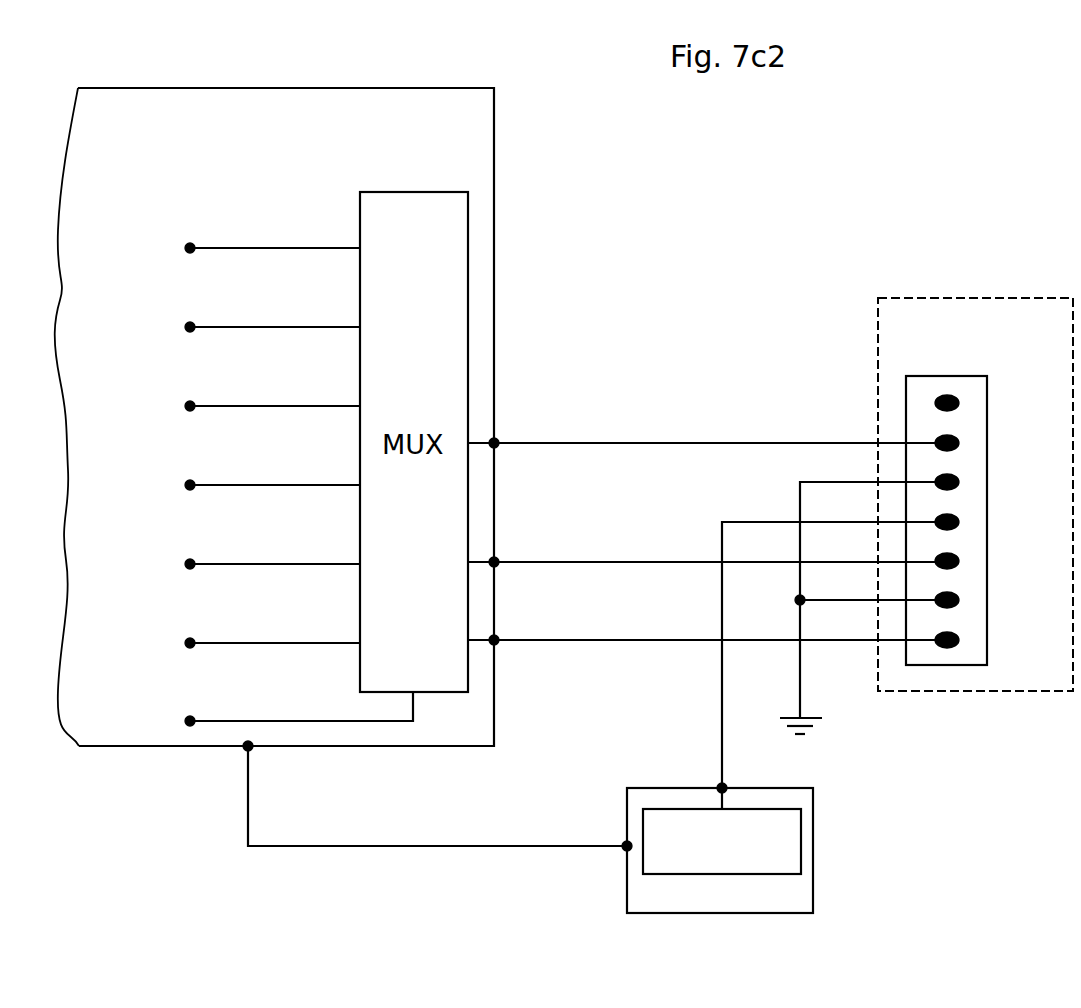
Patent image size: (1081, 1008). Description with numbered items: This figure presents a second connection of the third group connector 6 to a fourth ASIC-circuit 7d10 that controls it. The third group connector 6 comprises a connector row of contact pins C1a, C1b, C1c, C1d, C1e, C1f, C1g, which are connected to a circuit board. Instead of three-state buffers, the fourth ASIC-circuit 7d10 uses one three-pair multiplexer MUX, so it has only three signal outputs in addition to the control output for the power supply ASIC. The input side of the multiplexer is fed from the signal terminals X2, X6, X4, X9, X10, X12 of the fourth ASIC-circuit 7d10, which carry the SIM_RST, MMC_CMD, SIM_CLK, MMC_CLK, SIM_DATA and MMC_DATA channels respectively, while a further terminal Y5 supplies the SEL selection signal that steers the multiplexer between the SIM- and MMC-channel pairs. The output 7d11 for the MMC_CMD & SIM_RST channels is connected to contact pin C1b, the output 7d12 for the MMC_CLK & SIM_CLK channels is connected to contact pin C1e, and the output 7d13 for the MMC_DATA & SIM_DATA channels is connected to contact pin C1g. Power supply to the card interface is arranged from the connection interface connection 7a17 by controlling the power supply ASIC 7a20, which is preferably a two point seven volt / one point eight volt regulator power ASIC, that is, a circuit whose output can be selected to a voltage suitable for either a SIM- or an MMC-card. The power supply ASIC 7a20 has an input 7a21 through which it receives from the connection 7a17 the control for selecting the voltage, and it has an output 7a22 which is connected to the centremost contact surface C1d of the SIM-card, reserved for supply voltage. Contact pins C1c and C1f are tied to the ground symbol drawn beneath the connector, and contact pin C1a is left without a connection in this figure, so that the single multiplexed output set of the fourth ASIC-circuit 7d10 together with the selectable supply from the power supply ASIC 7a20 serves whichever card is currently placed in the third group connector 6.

The fourth ASIC-circuit 7d10 is at (494, 118).
The output for MMC_CMD & SIM_RST channels 7d11 is at (494, 443).
The output for MMC_CLK & SIM_CLK channels 7d12 is at (494, 562).
The output for MMC_DATA & SIM_DATA channels 7d13 is at (494, 640).
The third group connector 6 is at (878, 310).
The contact pin C1a is at (990, 403).
The contact pin C1b is at (990, 443).
The contact pin C1c is at (989, 482).
The contact surface C1d is at (990, 522).
The contact pin C1e is at (990, 561).
The contact pin C1f is at (987, 600).
The contact pin C1g is at (990, 640).
The connection interface connection 7a17 is at (248, 746).
The power supply ASIC 7a20 is at (813, 846).
The input of power supply ASIC 7a21 is at (627, 846).
The output of power supply ASIC 7a22 is at (722, 788).
The SIM_RST pin X2 is at (190, 248).
The MMC_CMD pin X6 is at (190, 327).
The SIM_CLK pin X4 is at (190, 406).
The MMC_CLK pin X9 is at (190, 485).
The SIM_DATA pin X10 is at (190, 564).
The MMC_DATA pin X12 is at (190, 643).
The SEL pin Y5 is at (190, 721).